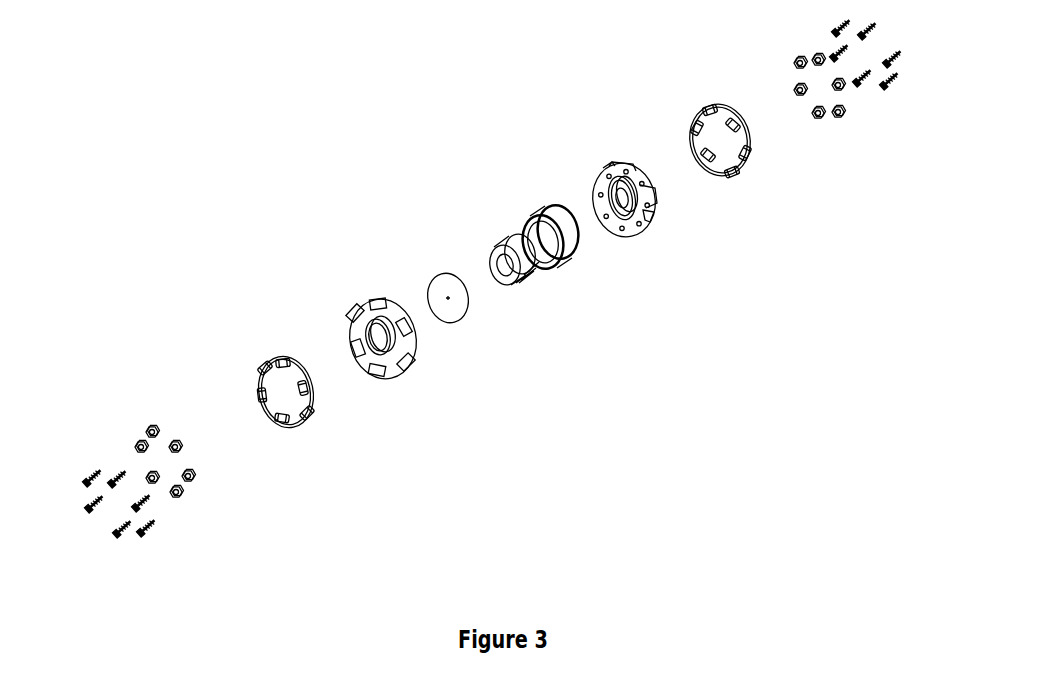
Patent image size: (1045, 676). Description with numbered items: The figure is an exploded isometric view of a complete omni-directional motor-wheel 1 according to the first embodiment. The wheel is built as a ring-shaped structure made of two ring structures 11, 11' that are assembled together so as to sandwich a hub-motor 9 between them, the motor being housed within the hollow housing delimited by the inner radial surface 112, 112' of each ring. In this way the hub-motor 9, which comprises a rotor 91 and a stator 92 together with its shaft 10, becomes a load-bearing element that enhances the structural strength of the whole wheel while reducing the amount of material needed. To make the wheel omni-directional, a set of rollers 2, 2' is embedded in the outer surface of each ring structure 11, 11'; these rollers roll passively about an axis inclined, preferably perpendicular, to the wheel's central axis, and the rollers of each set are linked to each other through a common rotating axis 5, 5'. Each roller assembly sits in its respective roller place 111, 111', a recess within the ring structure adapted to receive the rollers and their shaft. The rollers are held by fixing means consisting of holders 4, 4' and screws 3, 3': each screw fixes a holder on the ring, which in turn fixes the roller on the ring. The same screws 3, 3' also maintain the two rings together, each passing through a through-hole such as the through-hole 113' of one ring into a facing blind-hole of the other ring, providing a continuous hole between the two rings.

The omni-directional motor-wheel 1 is at (645, 412).
The rollers 2 is at (266, 378).
The screws 3 is at (94, 474).
The holder 4 is at (200, 466).
The common rotating axis 5 is at (309, 414).
The hub-motor 9 is at (592, 242).
The shaft 10 is at (493, 270).
The ring structure 11 is at (352, 314).
The rotor 91 is at (495, 242).
The stator 92 is at (557, 212).
The roller place 111 is at (421, 370).
The inner radial surface 112 is at (348, 337).
The ring structure 11' is at (617, 173).
The roller place 111' is at (701, 232).
The inner radial surface 112' is at (597, 173).
The through-hole 113' is at (672, 240).
The rollers 2' is at (745, 140).
The screws 3' is at (887, 69).
The holder 4' is at (804, 68).
The common rotating axis 5' is at (713, 124).